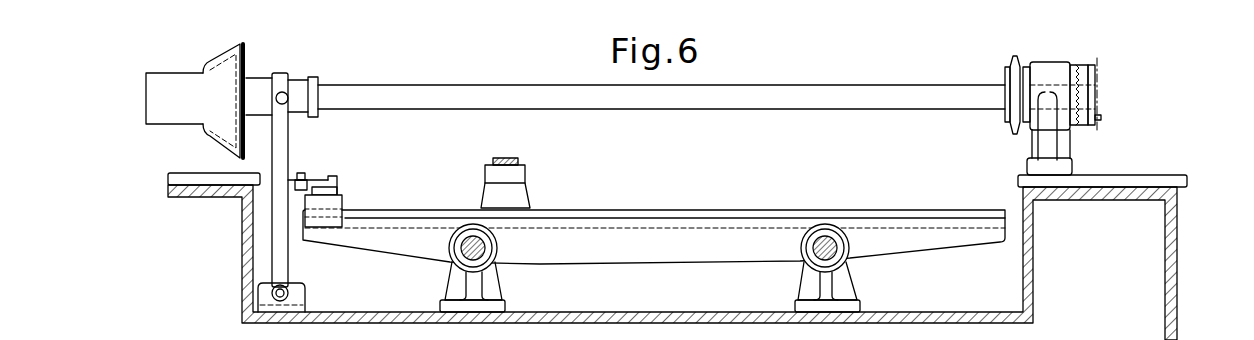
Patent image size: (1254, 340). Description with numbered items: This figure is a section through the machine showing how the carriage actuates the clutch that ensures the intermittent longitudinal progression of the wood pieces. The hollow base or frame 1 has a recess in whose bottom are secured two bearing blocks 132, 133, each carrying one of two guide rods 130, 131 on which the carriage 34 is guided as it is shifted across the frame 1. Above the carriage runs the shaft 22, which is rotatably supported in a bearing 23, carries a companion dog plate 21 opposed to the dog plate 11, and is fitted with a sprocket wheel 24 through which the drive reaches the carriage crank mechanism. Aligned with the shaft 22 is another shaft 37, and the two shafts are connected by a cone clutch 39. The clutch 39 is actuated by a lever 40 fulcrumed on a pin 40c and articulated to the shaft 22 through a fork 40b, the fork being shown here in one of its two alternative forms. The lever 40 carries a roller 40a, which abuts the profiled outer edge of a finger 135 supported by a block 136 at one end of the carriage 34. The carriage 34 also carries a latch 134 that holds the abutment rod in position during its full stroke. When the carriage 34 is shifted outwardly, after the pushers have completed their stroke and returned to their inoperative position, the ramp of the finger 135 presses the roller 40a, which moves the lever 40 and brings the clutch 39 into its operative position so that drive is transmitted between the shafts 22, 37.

The base or frame 1 is at (1173, 235).
The dog plate 11 is at (1096, 73).
The companion dog plate 21 is at (1080, 70).
The shaft 22 is at (409, 97).
The bearing 23 is at (1047, 148).
The sprocket wheel 24 is at (1013, 60).
The carriage 34 is at (742, 222).
The shaft 37 is at (157, 107).
The cone clutch 39 is at (223, 130).
The lever 40 is at (283, 146).
The roller 40a is at (308, 183).
The fork 40b is at (279, 83).
The pin 40c is at (292, 287).
The rod 130 is at (470, 240).
The rod 131 is at (828, 243).
The bearing block 132 is at (460, 287).
The bearing block 133 is at (845, 292).
The latch 134 is at (505, 158).
The finger 135 is at (334, 183).
The block 136 is at (338, 202).